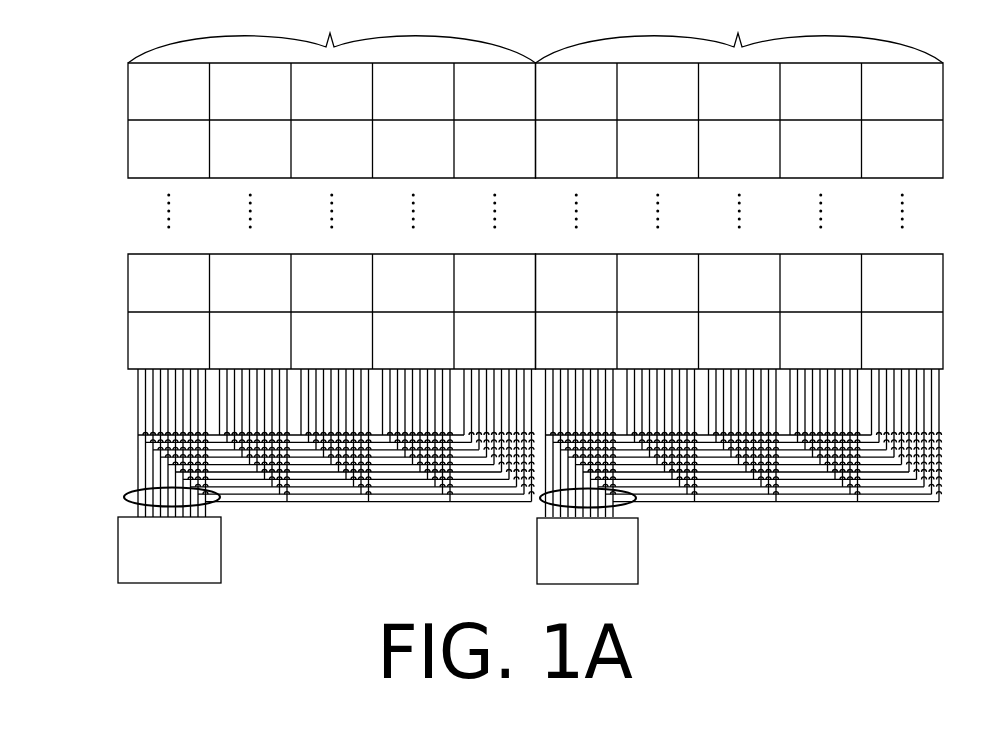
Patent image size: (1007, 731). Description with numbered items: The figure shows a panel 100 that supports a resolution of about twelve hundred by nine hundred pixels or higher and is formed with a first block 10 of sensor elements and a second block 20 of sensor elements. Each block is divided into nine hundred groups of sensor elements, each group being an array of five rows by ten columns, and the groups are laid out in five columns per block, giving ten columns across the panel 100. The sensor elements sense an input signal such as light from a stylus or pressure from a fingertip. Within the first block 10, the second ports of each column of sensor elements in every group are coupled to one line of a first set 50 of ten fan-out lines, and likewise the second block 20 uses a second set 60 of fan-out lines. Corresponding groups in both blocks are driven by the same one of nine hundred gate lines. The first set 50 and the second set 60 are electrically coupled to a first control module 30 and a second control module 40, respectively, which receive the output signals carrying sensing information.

The panel 100 is at (93, 20).
The first block 10 is at (316, 265).
The second block 20 is at (740, 265).
The first control module 30 is at (128, 517).
The second control module 40 is at (537, 535).
The first set of fan-out lines 50 is at (137, 488).
The second set of fan-out lines 60 is at (623, 507).